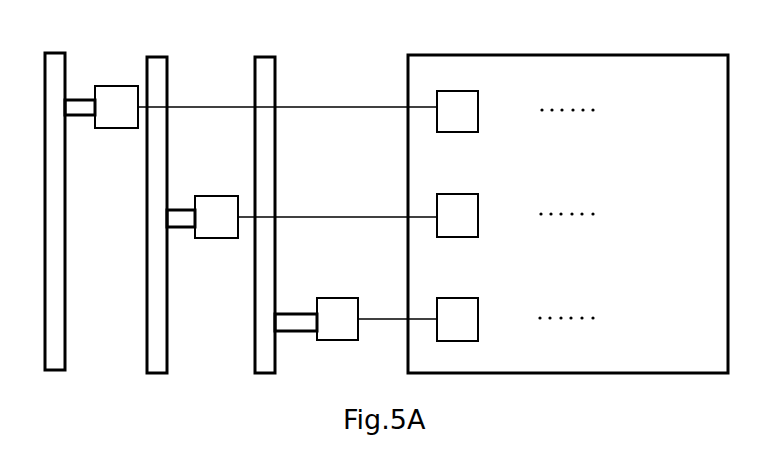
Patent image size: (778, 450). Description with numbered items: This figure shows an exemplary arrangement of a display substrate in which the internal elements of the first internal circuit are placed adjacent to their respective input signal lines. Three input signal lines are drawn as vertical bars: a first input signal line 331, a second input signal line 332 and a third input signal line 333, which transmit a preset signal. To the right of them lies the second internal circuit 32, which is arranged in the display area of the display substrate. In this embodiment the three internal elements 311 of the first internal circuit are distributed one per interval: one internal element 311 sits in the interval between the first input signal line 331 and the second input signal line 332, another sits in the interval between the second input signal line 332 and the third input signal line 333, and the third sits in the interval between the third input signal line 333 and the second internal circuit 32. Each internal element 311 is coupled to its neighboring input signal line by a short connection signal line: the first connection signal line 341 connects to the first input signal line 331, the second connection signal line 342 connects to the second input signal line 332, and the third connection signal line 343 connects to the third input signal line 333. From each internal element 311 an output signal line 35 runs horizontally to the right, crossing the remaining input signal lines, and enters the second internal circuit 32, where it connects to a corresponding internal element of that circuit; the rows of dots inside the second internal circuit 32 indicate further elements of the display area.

The first input signal line 331 is at (50, 53).
The second input signal line 332 is at (153, 57).
The third input signal line 333 is at (262, 57).
The first connection signal line 341 is at (72, 100).
The second connection signal line 342 is at (170, 210).
The third connection signal line 343 is at (288, 314).
The internal element 311 is at (226, 213).
The output signal line 35 is at (312, 106).
The second internal circuit 32 is at (566, 53).